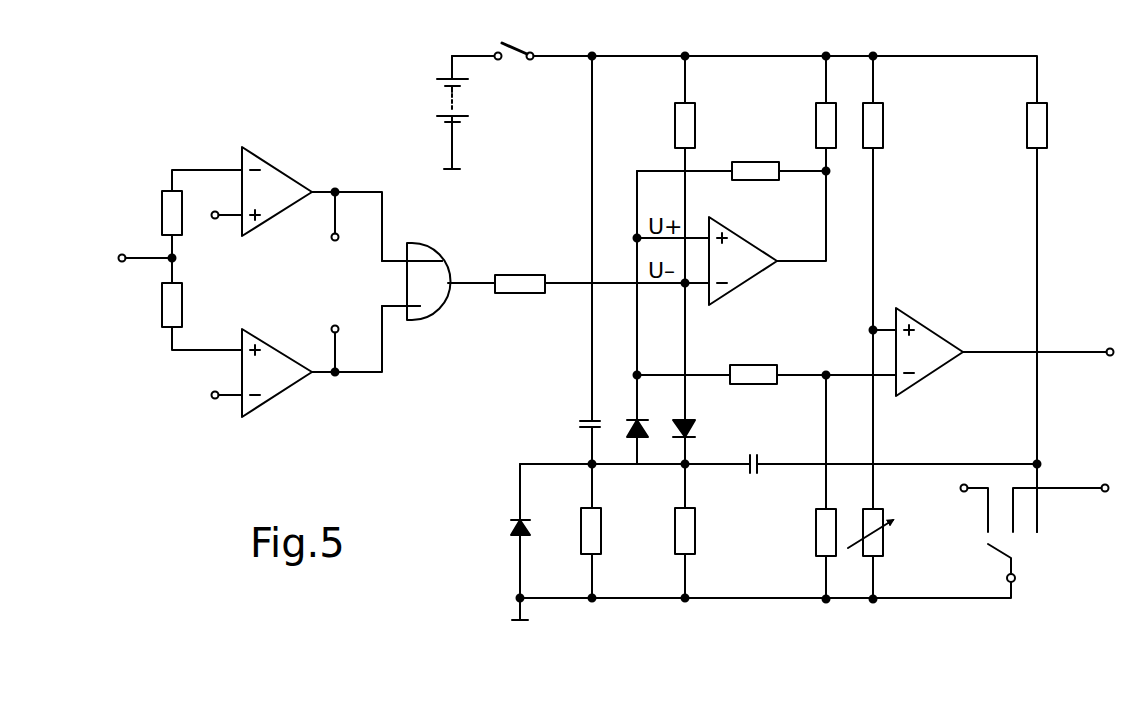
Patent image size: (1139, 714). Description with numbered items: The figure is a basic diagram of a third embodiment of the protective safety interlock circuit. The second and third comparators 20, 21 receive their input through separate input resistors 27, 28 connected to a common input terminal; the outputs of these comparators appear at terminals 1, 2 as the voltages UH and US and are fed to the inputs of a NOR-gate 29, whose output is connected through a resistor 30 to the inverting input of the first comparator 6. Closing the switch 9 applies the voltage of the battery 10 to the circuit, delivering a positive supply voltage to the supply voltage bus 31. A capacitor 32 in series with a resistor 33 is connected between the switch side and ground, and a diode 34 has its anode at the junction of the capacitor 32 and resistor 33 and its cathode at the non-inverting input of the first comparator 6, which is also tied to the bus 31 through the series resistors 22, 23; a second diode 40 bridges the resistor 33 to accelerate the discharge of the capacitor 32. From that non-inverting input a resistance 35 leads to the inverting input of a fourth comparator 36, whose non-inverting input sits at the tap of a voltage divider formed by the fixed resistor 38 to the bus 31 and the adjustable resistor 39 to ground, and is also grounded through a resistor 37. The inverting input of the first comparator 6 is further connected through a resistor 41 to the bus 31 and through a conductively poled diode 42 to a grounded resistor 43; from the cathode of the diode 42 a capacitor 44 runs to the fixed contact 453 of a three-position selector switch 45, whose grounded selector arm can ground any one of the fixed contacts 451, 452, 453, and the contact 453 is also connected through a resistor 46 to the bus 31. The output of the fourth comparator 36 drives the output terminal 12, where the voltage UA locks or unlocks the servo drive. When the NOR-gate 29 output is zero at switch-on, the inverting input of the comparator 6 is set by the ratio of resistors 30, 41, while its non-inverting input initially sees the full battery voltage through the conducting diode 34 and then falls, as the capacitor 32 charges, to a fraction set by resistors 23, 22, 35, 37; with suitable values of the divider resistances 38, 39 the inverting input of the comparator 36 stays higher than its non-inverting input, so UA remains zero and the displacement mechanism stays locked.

The terminal UH 1 is at (339, 237).
The terminal US 2 is at (339, 333).
The first comparator 6 is at (752, 267).
The switch 9 is at (515, 48).
The battery 10 is at (446, 100).
The output terminal 12 is at (1109, 348).
The second comparator 20 is at (280, 183).
The third comparator 21 is at (275, 380).
The resistor 22 is at (757, 167).
The resistor 23 is at (816, 127).
The input resistor 27 is at (162, 210).
The input resistor 28 is at (162, 310).
The NOR-gate 29 is at (437, 270).
The resistor 30 is at (520, 286).
The supply voltage bus 31 is at (628, 56).
The capacitor 32 is at (578, 423).
The resistor 33 is at (603, 530).
The diode 34 is at (627, 432).
The resistance 35 is at (751, 365).
The fourth comparator 36 is at (927, 340).
The resistor 37 is at (816, 532).
The fixed resistor 38 is at (883, 127).
The adjustable resistor 39 is at (883, 546).
The second diode 40 is at (511, 528).
The resistor 41 is at (675, 127).
The diode 42 is at (696, 427).
The resistor 43 is at (696, 530).
The capacitor 44 is at (755, 455).
The three-position selector switch 45 is at (988, 563).
The resistor 46 is at (1047, 128).
The fixed contact 451 is at (988, 528).
The fixed contact 452 is at (1013, 522).
The fixed contact 453 is at (1037, 528).